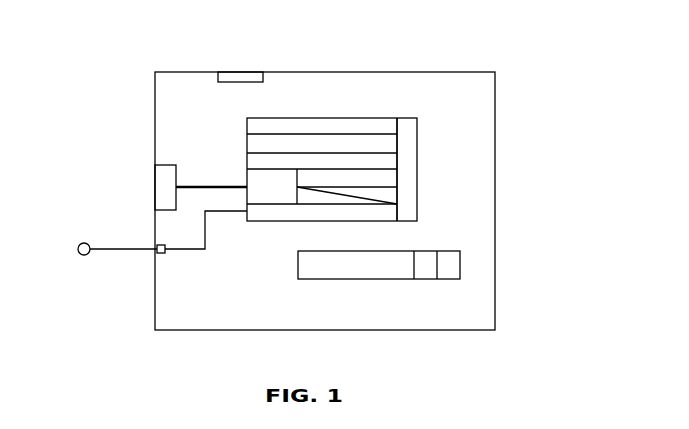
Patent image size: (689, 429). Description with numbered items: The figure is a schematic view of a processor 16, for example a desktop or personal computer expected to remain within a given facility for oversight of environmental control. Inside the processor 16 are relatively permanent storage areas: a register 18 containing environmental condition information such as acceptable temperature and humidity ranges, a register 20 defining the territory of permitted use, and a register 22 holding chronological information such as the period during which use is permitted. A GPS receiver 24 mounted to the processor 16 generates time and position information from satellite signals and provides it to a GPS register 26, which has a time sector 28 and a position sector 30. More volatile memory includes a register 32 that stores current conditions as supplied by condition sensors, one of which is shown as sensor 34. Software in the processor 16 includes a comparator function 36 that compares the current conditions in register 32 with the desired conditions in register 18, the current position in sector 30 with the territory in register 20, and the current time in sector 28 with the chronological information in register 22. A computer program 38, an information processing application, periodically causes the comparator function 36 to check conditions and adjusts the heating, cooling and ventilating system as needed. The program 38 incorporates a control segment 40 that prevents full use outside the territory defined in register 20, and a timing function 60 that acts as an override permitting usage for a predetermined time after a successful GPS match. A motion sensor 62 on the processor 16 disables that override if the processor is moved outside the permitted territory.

The processor 16 is at (165, 92).
The register 18 is at (313, 126).
The register 20 is at (253, 146).
The register 22 is at (382, 158).
The GPS receiver 24 is at (158, 176).
The GPS register 26 is at (247, 178).
The time sector 28 is at (387, 177).
The position sector 30 is at (392, 195).
The register 32 is at (284, 213).
The condition sensor 34 is at (83, 243).
The comparator function 36 is at (411, 135).
The computer program 38 is at (340, 265).
The control segment 40 is at (447, 268).
The timing function 60 is at (420, 270).
The motion sensor 62 is at (250, 75).